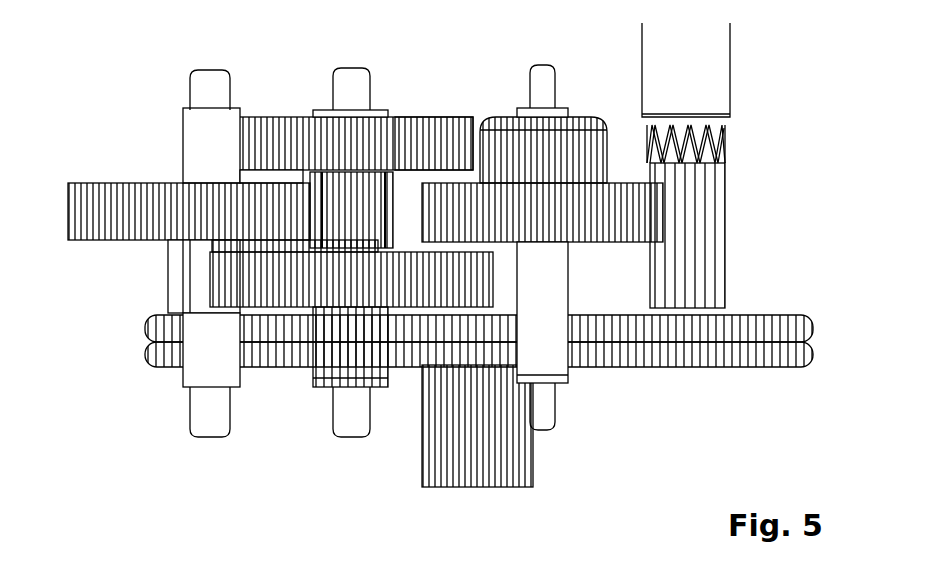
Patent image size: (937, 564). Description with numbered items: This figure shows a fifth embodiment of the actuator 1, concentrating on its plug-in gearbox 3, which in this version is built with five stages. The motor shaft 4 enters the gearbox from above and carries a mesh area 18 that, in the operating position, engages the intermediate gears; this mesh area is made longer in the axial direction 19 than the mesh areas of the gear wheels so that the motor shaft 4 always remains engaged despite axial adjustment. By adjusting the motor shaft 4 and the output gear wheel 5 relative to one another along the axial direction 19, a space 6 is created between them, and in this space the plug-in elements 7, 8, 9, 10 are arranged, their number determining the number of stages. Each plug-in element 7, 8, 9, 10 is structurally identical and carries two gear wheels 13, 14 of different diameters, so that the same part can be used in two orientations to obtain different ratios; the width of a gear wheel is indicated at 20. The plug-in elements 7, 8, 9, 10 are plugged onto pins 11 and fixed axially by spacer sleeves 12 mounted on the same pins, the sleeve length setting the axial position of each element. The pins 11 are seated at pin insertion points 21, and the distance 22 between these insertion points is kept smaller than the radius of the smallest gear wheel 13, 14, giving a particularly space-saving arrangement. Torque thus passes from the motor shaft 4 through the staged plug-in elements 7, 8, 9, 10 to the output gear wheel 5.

The actuator 1 is at (457, 270).
The plug-in gearbox 3 is at (336, 168).
The motor shaft 4 is at (705, 48).
The output gear wheel 5 is at (145, 353).
The space 6 is at (422, 88).
The plug-in element 7 is at (617, 163).
The plug-in element 8 is at (456, 98).
The plug-in element 9 is at (170, 160).
The plug-in element 10 is at (296, 310).
The pin 11 is at (208, 80).
The spacer sleeve 12 is at (213, 368).
The gear wheel 13 is at (97, 228).
The gear wheel 14 is at (172, 283).
The mesh area 18 is at (740, 137).
The axial direction 19 is at (860, 343).
The gear width 20 is at (52, 187).
The pin insertion point 21 is at (205, 460).
The distance 22 is at (527, 405).